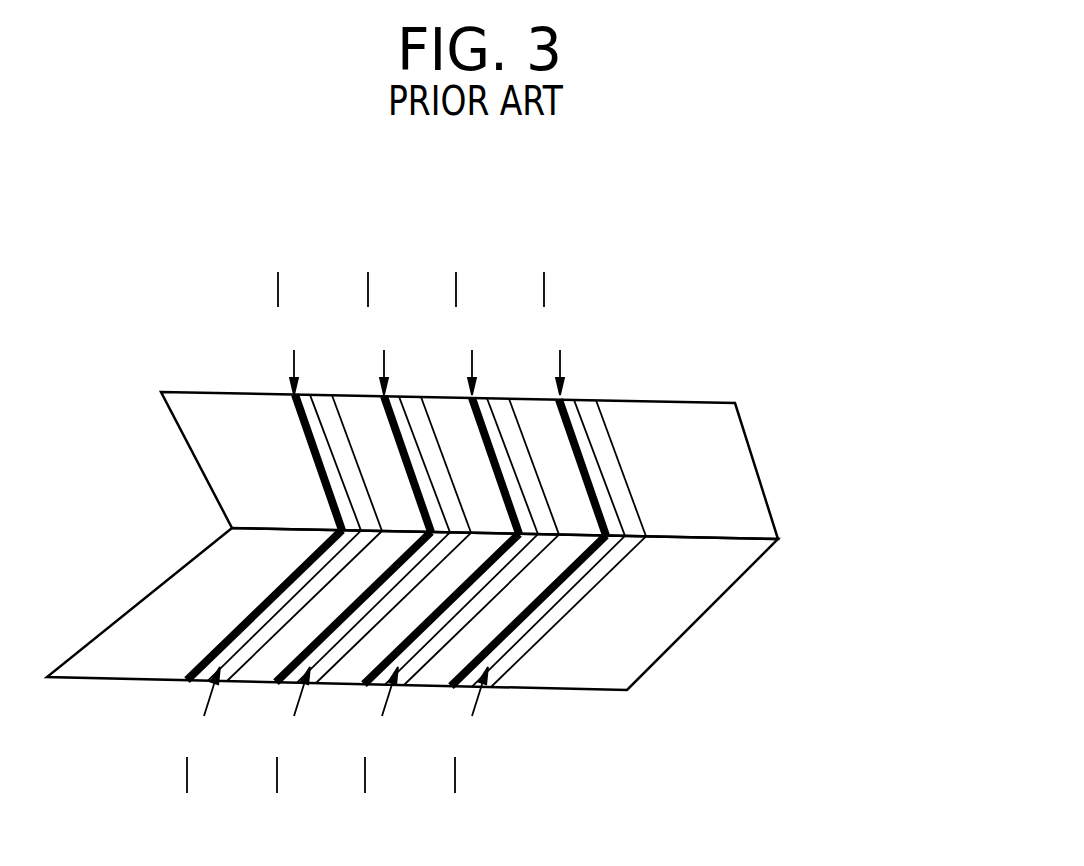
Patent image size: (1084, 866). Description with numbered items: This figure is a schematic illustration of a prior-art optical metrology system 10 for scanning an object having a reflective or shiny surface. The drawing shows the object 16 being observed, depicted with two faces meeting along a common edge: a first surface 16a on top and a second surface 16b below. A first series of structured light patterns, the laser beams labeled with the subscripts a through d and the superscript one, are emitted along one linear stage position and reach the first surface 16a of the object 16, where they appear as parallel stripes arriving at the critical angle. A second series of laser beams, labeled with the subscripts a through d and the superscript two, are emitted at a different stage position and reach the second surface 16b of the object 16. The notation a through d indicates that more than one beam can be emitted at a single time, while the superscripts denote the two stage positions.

The optical metrology system 10 is at (757, 368).
The object 16 is at (796, 517).
The first surface 16a is at (722, 455).
The second surface 16b is at (663, 630).